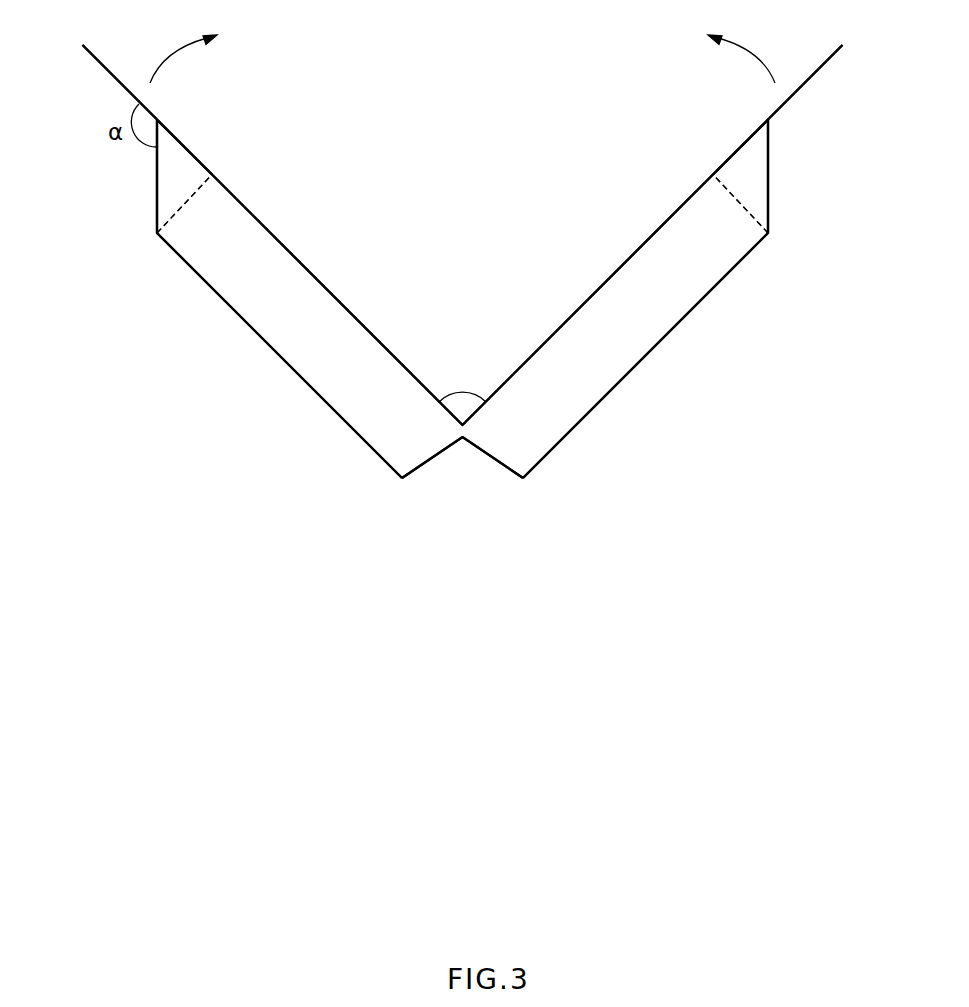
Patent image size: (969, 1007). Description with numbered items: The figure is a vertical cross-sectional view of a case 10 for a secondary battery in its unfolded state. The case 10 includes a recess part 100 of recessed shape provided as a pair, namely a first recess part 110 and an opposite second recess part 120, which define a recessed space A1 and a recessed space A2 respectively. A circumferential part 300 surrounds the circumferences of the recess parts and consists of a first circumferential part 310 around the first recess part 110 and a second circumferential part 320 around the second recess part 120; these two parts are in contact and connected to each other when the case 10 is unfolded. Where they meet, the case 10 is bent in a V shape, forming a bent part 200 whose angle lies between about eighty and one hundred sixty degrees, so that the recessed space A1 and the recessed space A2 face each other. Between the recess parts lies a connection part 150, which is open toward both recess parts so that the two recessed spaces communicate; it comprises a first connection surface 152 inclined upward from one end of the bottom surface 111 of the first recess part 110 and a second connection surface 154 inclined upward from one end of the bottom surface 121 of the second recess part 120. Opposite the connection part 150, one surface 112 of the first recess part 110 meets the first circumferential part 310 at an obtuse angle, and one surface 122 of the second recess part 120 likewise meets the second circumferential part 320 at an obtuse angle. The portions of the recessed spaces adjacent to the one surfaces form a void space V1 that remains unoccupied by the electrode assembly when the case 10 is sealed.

The case 10 is at (452, 130).
The recess part 100 is at (490, 580).
The first recess part 110 is at (205, 297).
The bottom surface of the first recess part 111 is at (277, 356).
The one surface of the first recess part 112 is at (155, 224).
The second recess part 120 is at (717, 297).
The bottom surface of the second recess part 121 is at (649, 356).
The one surface of the second recess part 122 is at (770, 224).
The connection part 150 is at (765, 580).
The first connection surface 152 is at (436, 462).
The second connection surface 154 is at (489, 462).
The bent part 200 is at (462, 422).
The circumferential part 300 is at (628, 580).
The first circumferential part 310 is at (213, 175).
The second circumferential part 320 is at (726, 157).
The void space V1 is at (170, 190).
The recessed space A1 is at (292, 300).
The recessed space A2 is at (635, 300).